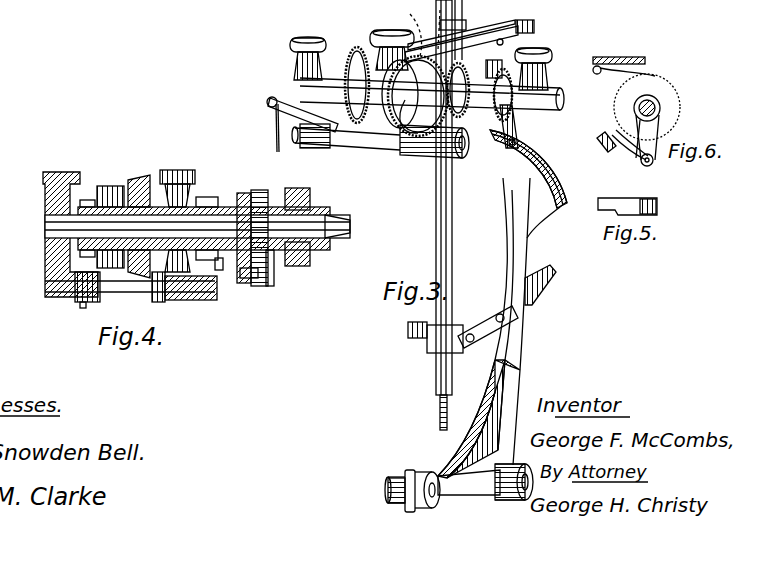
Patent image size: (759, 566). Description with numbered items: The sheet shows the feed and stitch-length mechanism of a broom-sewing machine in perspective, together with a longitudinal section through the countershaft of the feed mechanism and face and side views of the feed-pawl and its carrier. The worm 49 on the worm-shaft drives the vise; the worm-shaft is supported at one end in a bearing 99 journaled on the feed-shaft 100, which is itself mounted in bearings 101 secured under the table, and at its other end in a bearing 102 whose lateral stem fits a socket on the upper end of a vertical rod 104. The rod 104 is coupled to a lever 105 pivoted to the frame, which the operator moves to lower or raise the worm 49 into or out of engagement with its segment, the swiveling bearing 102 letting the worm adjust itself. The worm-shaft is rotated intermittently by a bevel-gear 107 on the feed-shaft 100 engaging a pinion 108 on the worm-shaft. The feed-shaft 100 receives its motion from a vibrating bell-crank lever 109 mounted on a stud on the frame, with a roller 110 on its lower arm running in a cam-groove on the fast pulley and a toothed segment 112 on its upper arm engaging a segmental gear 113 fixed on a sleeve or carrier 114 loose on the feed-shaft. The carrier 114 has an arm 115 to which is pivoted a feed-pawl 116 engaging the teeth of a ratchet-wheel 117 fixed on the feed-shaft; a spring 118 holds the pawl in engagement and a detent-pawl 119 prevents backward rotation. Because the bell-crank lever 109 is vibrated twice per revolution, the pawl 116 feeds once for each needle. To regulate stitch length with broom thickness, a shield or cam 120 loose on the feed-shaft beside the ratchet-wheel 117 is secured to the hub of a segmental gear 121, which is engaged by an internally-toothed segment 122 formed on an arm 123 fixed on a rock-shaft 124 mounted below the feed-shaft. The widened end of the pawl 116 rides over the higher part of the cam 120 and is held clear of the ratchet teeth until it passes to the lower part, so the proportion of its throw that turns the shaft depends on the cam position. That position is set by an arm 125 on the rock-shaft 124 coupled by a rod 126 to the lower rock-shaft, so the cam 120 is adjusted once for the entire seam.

In FIG. 3, the worm 49 is at (522, 21).
In FIG. 3, the bearing 99 is at (345, 62).
In FIG. 4, the bearing 99 is at (84, 212).
In FIG. 3, the feed-shaft 100 is at (562, 99).
In FIG. 4, the feed-shaft 100 is at (197, 228).
In FIG. 6, the feed-shaft 100 is at (661, 107).
In FIG. 3, the bearings 101 is at (300, 70).
In FIG. 4, the bearings 101 is at (59, 234).
In FIG. 3, the bearing 102 is at (480, 26).
In FIG. 3, the vertical rod 104 is at (460, 215).
In FIG. 3, the lever 105 is at (482, 324).
In FIG. 3, the bevel-gear 107 is at (405, 96).
In FIG. 4, the bevel-gear 107 is at (141, 218).
In FIG. 4, the pinion 108 is at (100, 186).
In FIG. 3, the bell-crank lever 109 is at (501, 339).
In FIG. 3, the roller 110 is at (411, 483).
In FIG. 3, the toothed segment 112 is at (540, 152).
In FIG. 3, the segmental gear 113 is at (520, 122).
In FIG. 4, the segmental gear 113 is at (302, 218).
In FIG. 4, the sleeve or carrier 114 is at (331, 219).
In FIG. 6, the sleeve or carrier 114 is at (636, 100).
In FIG. 4, the arm 115 is at (274, 270).
In FIG. 6, the arm 115 is at (646, 139).
In FIG. 4, the feed-pawl 116 is at (246, 270).
In FIG. 6, the feed-pawl 116 is at (618, 133).
In FIG. 5, the feed-pawl 116 is at (627, 198).
In FIG. 3, the ratchet-wheel 117 is at (468, 89).
In FIG. 4, the ratchet-wheel 117 is at (267, 229).
In FIG. 6, the spring 118 is at (606, 151).
In FIG. 6, the detent-pawl 119 is at (635, 66).
In FIG. 4, the shield or cam 120 is at (240, 193).
In FIG. 3, the segmental gear 121 is at (442, 30).
In FIG. 4, the segmental gear 121 is at (192, 221).
In FIG. 3, the internally-toothed segment 122 is at (406, 28).
In FIG. 3, the arm 123 is at (395, 116).
In FIG. 3, the rock-shaft 124 is at (355, 140).
In FIG. 4, the rock-shaft 124 is at (131, 290).
In FIG. 3, the arm 125 is at (302, 114).
In FIG. 3, the rod 126 is at (265, 128).